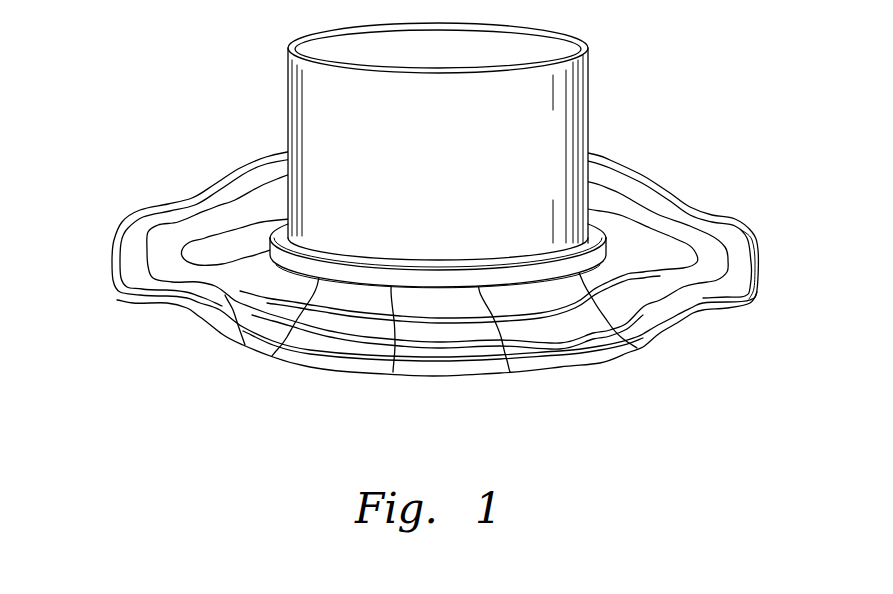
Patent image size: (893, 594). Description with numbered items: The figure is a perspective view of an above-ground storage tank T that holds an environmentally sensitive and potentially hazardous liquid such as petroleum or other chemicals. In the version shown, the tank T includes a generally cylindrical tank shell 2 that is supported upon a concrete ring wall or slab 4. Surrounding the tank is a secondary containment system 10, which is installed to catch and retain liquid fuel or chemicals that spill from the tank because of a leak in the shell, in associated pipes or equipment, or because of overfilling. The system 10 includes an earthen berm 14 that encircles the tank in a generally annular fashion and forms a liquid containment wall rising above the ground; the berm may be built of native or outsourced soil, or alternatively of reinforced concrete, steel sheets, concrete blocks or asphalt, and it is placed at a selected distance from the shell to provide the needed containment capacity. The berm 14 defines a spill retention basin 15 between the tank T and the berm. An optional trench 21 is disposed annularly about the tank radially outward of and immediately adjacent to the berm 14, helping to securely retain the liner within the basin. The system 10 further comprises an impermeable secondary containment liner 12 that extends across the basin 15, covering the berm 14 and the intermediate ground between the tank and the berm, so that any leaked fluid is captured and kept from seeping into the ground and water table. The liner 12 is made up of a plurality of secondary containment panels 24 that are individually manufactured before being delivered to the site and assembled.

The secondary containment system 10 is at (752, 214).
The secondary containment liner 12 is at (677, 200).
The earthen berm 14 is at (215, 228).
The spill retention basin 15 is at (252, 237).
The trench 21 is at (147, 290).
The secondary containment panels 24 is at (540, 367).
The concrete ring wall or slab 4 is at (523, 262).
The tank shell 2 is at (582, 117).
The above-ground storage tank T is at (588, 75).